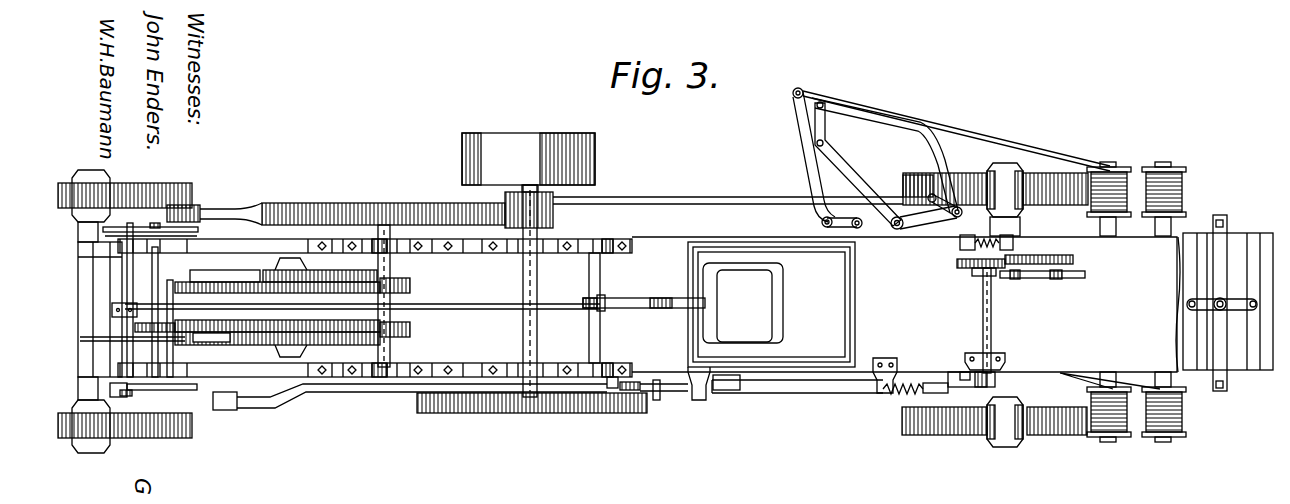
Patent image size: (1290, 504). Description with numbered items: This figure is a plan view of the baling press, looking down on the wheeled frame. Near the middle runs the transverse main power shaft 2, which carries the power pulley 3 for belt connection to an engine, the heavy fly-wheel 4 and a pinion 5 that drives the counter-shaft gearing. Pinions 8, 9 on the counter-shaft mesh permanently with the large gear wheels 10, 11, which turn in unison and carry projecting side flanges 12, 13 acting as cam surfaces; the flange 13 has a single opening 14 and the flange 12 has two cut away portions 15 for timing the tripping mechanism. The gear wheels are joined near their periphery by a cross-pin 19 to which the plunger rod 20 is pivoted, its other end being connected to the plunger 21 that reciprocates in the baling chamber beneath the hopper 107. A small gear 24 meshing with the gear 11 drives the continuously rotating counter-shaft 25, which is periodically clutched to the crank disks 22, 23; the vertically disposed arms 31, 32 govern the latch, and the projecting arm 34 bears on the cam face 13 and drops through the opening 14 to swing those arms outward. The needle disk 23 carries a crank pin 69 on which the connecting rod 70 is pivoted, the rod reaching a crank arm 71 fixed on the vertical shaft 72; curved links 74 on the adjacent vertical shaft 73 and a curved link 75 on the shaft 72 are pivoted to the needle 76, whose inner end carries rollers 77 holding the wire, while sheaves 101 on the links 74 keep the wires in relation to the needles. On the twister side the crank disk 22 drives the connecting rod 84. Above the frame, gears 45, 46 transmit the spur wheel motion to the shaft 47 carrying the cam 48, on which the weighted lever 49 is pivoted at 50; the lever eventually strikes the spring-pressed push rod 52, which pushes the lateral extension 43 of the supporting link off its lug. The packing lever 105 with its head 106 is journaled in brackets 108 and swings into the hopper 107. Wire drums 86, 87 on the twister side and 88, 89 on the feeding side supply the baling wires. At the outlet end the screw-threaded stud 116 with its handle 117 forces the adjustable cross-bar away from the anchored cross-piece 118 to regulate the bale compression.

The main power shaft 2 is at (537, 282).
The power pulley 3 is at (528, 159).
The fly-wheel 4 is at (545, 413).
The pinion 5 is at (553, 218).
The pinion 8 is at (410, 285).
The pinion 9 is at (410, 332).
The large gear wheel 10 is at (252, 293).
The large gear wheel 11 is at (278, 322).
The side flange 12 is at (314, 271).
The side flange 13 is at (246, 338).
The opening 14 is at (223, 343).
The cut away portions 15 is at (258, 268).
The cross-pin 19 is at (372, 305).
The plunger rod 20 is at (453, 303).
The plunger 21 is at (771, 304).
The crank disk 22 is at (196, 400).
The crank disk 23 is at (190, 205).
The small gear 24 is at (160, 323).
The counter-shaft 25 is at (153, 295).
The arm 31 is at (115, 397).
The arm 32 is at (197, 387).
The projecting arm 34 is at (105, 338).
The lateral extension 43 is at (630, 382).
The gear 45 is at (1075, 261).
The gear 46 is at (960, 268).
The shaft 47 is at (992, 318).
The cam 48 is at (1005, 368).
The weighted lever 49 is at (976, 387).
The pivot 50 is at (960, 375).
The push rod 52 is at (848, 393).
The crank pin 69 is at (200, 212).
The connecting rod 70 is at (342, 203).
The crank arm 71 is at (925, 185).
The vertical shaft 72 is at (897, 232).
The vertical shaft 73 is at (995, 199).
The curved links 74 is at (905, 122).
The curved link 75 is at (855, 175).
The needle 76 is at (818, 190).
The rollers 77 is at (825, 230).
The connecting rod 84 is at (402, 388).
The wire drum 86 is at (1170, 440).
The wire drum 87 is at (1105, 440).
The wire drum 88 is at (1182, 178).
The wire drum 89 is at (1110, 170).
The sheaves 101 is at (802, 90).
The packing lever 105 is at (667, 310).
The head 106 is at (752, 330).
The hopper 107 is at (866, 318).
The brackets 108 is at (603, 372).
The screw-threaded stud 116 is at (1210, 308).
The handle 117 is at (1190, 304).
The cross-piece 118 is at (1222, 240).